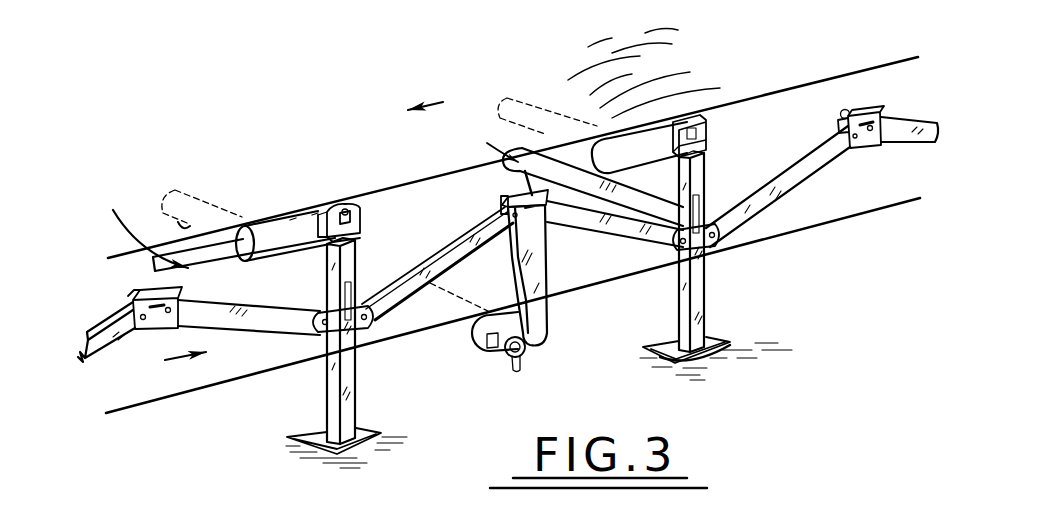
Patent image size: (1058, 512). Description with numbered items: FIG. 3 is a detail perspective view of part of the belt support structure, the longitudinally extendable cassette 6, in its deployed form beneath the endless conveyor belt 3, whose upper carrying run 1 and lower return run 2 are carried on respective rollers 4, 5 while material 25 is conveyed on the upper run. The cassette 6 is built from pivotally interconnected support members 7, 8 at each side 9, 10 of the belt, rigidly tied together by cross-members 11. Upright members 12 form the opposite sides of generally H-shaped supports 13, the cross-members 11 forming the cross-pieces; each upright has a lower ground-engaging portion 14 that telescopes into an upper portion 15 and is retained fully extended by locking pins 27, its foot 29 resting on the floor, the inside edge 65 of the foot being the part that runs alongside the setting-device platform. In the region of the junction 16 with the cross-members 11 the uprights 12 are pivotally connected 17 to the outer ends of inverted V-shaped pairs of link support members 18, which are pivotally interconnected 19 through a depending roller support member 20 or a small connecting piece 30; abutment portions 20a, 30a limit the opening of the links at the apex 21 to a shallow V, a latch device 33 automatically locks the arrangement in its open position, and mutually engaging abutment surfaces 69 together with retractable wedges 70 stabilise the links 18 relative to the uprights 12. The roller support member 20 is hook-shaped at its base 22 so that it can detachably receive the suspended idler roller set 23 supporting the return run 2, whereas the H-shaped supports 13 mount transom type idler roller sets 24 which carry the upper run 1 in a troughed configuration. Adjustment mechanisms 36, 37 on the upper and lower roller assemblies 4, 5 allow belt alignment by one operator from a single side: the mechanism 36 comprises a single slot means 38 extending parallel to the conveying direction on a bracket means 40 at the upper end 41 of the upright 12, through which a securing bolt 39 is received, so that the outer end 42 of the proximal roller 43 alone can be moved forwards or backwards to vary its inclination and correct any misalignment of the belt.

The upper carrying run 1 is at (512, 213).
The lower return run 2 is at (783, 238).
The endless conveyor belt 3 is at (888, 64).
The upper belt supporting roller assembly 4 is at (182, 178).
The lower belt supporting roller assembly 5 is at (395, 270).
The cassette 6 is at (337, 190).
The support member 7 is at (627, 224).
The support member 8 is at (679, 315).
The side of conveyor belt 9 is at (800, 185).
The side of conveyor belt 10 is at (490, 108).
The cross-member 11 is at (300, 195).
The upright member 12 is at (709, 169).
The H-shaped support 13 is at (328, 391).
The lower ground-engaging portion 14 is at (704, 286).
The upper portion 15 is at (712, 184).
The junction 16 is at (286, 294).
The pivotal connection 17 is at (365, 332).
The link support member 18 is at (463, 226).
The pivotal interconnection 19 is at (541, 224).
The roller support member 20 is at (547, 316).
The abutment portion 20a is at (500, 212).
The apex 21 is at (499, 192).
The hook-shaped base 22 is at (536, 358).
The suspended idler roller set 23 is at (462, 330).
The transom type idler roller set 24 is at (268, 215).
The material 25 is at (598, 73).
The locking pin 27 is at (317, 298).
The foot 29 is at (388, 451).
The small connecting piece 30 is at (858, 108).
The abutment portion 30a is at (841, 124).
The latch device 33 is at (115, 287).
The adjustment mechanism 36 is at (701, 128).
The adjustment mechanism 37 is at (498, 360).
The slot means 38 is at (357, 219).
The securing bolt 39 is at (320, 208).
The bracket means 40 is at (312, 215).
The upper end 41 is at (713, 163).
The outer end of proximal roller 42 is at (210, 198).
The proximal roller 43 is at (293, 219).
The inside edge of foot 65 is at (665, 343).
The abutment surface 69 is at (686, 263).
The retractable wedge 70 is at (152, 330).